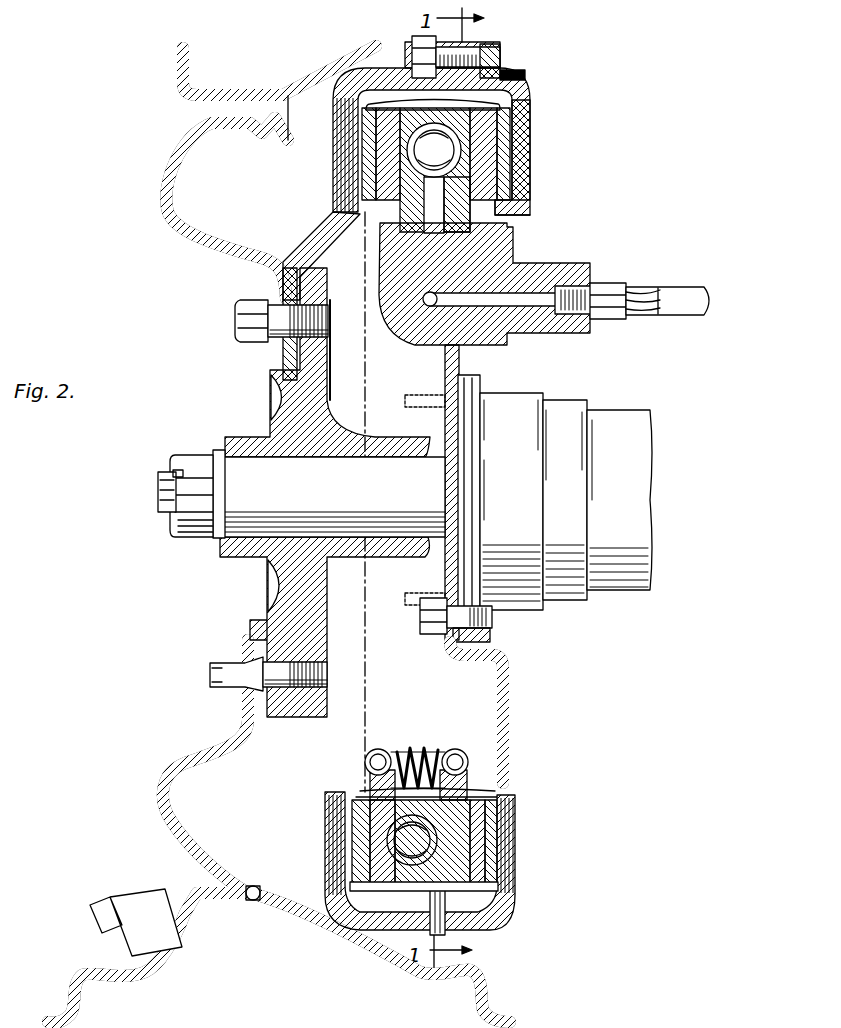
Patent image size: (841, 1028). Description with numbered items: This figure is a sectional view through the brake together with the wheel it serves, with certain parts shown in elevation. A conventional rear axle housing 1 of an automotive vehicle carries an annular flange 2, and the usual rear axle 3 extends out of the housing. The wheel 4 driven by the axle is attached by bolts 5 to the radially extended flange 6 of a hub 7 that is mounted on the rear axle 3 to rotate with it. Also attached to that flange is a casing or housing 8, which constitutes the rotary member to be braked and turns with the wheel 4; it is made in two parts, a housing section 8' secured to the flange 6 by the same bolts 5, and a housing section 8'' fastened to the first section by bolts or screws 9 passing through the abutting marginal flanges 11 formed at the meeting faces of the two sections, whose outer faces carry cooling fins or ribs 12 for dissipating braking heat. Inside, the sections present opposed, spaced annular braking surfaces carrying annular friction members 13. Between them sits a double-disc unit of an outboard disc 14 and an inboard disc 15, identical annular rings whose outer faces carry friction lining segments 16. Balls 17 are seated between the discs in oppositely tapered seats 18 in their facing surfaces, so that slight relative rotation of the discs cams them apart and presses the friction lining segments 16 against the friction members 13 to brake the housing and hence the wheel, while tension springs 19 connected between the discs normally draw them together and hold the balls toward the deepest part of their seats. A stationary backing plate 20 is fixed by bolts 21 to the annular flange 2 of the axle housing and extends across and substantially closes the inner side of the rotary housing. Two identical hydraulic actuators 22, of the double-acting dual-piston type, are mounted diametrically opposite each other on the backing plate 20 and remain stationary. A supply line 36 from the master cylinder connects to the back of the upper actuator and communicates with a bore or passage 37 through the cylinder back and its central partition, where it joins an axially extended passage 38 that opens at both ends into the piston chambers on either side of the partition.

The rear axle housing 1 is at (603, 598).
The annular flange 2 is at (465, 378).
The rear axle 3 is at (275, 517).
The wheel 4 is at (162, 785).
The bolts 5 is at (240, 318).
The radially extended flange 6 is at (318, 360).
The hub 7 is at (258, 440).
The casing or housing 8 is at (411, 141).
The housing section 8' is at (320, 254).
The housing section 8'' is at (538, 150).
The bolts or screws 9 is at (488, 66).
The marginal flanges 11 is at (470, 46).
The cooling fins or ribs 12 is at (345, 137).
The friction members 13 is at (372, 148).
The outboard disc 14 is at (400, 183).
The inboard disc 15 is at (457, 192).
The friction lining segments 16 is at (365, 125).
The balls 17 is at (433, 140).
The tapered seats 18 is at (393, 848).
The tension springs 19 is at (415, 748).
The backing plate 20 is at (510, 712).
The bolts 21 is at (420, 622).
The actuators 22 is at (488, 250).
The supply line 36 is at (680, 293).
The bore or passage 37 is at (532, 300).
The axially extended passage 38 is at (430, 306).